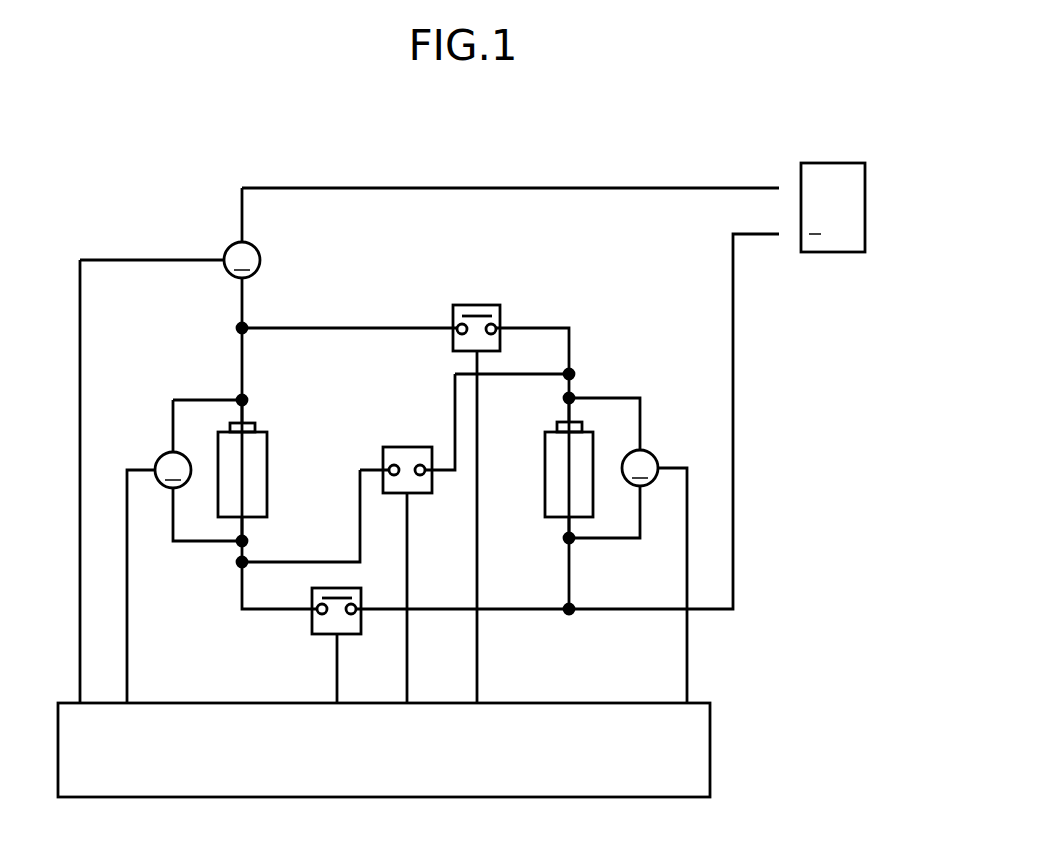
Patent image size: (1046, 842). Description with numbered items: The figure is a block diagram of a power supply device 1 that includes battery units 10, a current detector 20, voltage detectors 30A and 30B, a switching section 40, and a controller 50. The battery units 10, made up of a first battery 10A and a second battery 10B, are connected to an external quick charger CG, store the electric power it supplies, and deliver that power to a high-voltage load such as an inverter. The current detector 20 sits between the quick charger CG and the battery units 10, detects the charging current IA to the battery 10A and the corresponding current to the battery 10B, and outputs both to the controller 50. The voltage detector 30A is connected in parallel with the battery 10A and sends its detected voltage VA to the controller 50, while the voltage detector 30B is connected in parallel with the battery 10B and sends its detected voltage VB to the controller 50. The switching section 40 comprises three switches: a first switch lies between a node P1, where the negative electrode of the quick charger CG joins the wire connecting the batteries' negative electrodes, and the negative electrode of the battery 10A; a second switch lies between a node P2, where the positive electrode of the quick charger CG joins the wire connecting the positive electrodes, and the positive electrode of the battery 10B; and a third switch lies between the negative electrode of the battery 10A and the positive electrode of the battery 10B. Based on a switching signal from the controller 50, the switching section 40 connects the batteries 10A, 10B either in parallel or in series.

The power supply device 1 is at (397, 147).
The battery units 10 is at (405, 478).
The battery 10A is at (268, 430).
The battery 10B is at (549, 521).
The current detector 20 is at (258, 247).
The voltage detector 30A is at (160, 456).
The voltage detector 30B is at (653, 455).
The switching section 40 is at (478, 304).
The controller 50 is at (616, 703).
The quick charger CG is at (832, 162).
The node P1 is at (568, 615).
The node P2 is at (236, 328).
The detected voltage VA is at (82, 600).
The detected voltage VB is at (689, 660).
The current IA is at (122, 258).